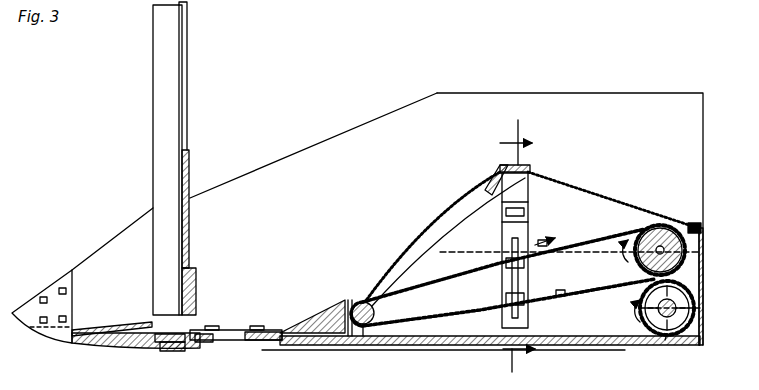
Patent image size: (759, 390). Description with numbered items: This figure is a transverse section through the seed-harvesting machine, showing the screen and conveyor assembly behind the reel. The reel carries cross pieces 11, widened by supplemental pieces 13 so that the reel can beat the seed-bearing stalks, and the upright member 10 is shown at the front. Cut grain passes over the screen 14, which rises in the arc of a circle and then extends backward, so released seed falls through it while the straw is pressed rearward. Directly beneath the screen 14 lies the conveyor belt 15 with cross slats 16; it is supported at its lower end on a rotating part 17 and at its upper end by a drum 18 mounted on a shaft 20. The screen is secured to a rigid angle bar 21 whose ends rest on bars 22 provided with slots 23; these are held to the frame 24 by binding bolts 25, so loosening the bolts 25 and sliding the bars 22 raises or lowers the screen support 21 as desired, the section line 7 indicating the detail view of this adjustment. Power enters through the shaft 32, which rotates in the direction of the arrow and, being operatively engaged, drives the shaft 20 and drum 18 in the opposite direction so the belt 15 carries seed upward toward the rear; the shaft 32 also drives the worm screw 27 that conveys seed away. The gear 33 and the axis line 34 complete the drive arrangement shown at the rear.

The section line 7- 7 is at (517, 248).
The mast 10 is at (180, 98).
The cross pieces 11 is at (197, 282).
The supplemental pieces 13 is at (190, 172).
The screen 14 is at (388, 282).
The conveyor belt 15 is at (483, 287).
The cross slats 16 is at (574, 241).
The rotating part 17 is at (375, 312).
The drum 18 is at (703, 238).
The shaft 20 is at (690, 222).
The angle bar 21 is at (520, 168).
The bars 22 is at (528, 223).
The slots 23 is at (524, 308).
The frame 24 is at (578, 330).
The binding bolts 25 is at (524, 296).
The worm screw 27 is at (665, 340).
The shaft 32 is at (700, 308).
The lower gear 33 is at (696, 324).
The shaft axis 34 is at (708, 262).